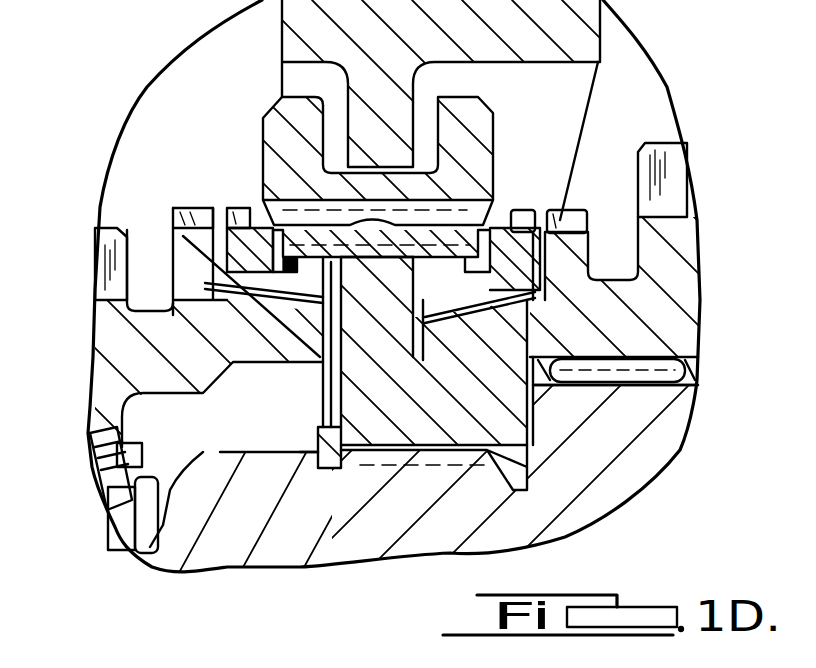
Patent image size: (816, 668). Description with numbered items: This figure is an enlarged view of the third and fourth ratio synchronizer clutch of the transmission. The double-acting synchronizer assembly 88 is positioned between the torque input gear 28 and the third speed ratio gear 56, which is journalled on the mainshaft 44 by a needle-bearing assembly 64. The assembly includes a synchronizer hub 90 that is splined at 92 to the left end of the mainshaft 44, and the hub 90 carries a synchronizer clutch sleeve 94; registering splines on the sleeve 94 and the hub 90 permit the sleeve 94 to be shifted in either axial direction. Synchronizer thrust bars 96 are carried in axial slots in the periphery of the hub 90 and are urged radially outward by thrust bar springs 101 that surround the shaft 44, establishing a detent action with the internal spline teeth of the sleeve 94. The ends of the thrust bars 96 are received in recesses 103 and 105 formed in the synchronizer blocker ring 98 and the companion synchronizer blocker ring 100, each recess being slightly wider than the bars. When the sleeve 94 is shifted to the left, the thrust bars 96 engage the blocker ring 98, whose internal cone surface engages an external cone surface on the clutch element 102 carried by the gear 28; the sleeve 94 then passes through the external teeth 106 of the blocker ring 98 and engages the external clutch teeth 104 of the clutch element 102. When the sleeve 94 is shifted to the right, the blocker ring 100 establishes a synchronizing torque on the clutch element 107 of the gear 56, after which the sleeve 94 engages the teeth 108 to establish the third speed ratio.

The torque input gear 28 is at (100, 240).
The mainshaft 44 is at (333, 532).
The third speed ratio gear 56 is at (652, 293).
The needle-bearing assembly 64 is at (630, 382).
The double-acting synchronizer assembly 88 is at (375, 423).
The synchronizer hub 90 is at (460, 432).
The spline 92 is at (493, 452).
The synchronizer clutch sleeve 94 is at (490, 124).
The synchronizer thrust bars 96 is at (268, 300).
The synchronizer blocker ring 98 is at (222, 246).
The companion synchronizer blocker ring 100 is at (510, 210).
The thrust bar springs 101 is at (360, 273).
The clutch element 102 is at (197, 262).
The recess 103 is at (284, 262).
The external clutch teeth 104 is at (187, 207).
The recess 105 is at (455, 268).
The external teeth 106 is at (231, 207).
The clutch element 107 is at (566, 250).
The teeth 108 is at (578, 217).